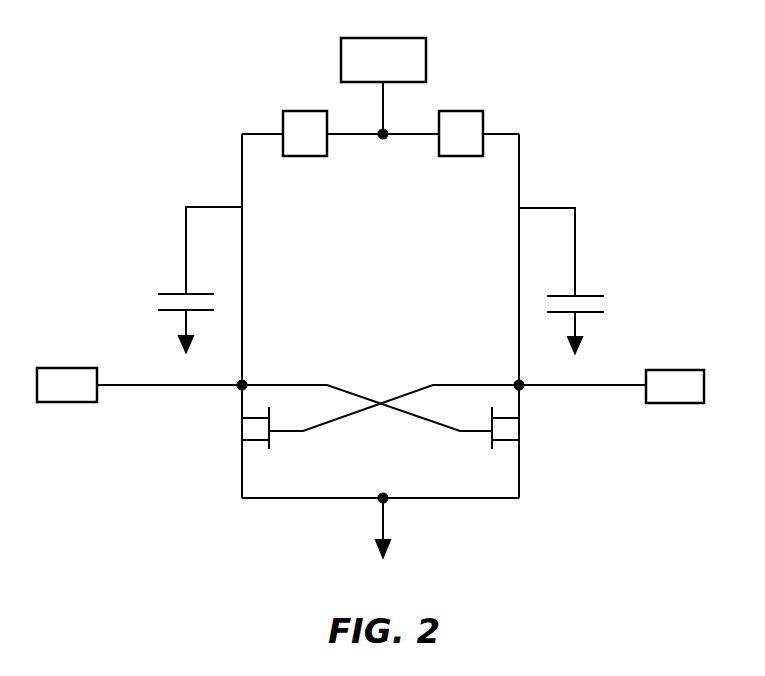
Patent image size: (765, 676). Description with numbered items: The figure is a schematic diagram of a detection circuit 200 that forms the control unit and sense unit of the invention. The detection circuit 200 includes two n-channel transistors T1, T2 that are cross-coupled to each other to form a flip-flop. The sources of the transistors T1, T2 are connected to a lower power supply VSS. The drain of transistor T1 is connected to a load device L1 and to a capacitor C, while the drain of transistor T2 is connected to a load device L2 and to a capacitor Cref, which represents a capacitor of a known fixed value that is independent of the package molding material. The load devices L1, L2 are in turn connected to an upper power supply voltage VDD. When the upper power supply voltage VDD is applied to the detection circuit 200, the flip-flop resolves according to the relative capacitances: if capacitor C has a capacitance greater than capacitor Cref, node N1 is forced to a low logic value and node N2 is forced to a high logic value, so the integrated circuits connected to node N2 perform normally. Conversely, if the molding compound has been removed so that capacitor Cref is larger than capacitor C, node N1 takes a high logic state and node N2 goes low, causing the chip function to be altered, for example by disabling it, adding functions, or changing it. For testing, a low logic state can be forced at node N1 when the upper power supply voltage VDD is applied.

The detection circuit 200 is at (633, 141).
The upper power supply voltage VDD is at (383, 88).
The lower power supply VSS is at (382, 539).
The load device L1 is at (305, 133).
The load device L2 is at (461, 133).
The capacitor C is at (200, 279).
The capacitor Cref is at (570, 280).
The node N1 is at (142, 385).
The node N2 is at (610, 386).
The transistor T1 is at (237, 428).
The transistor T2 is at (525, 428).